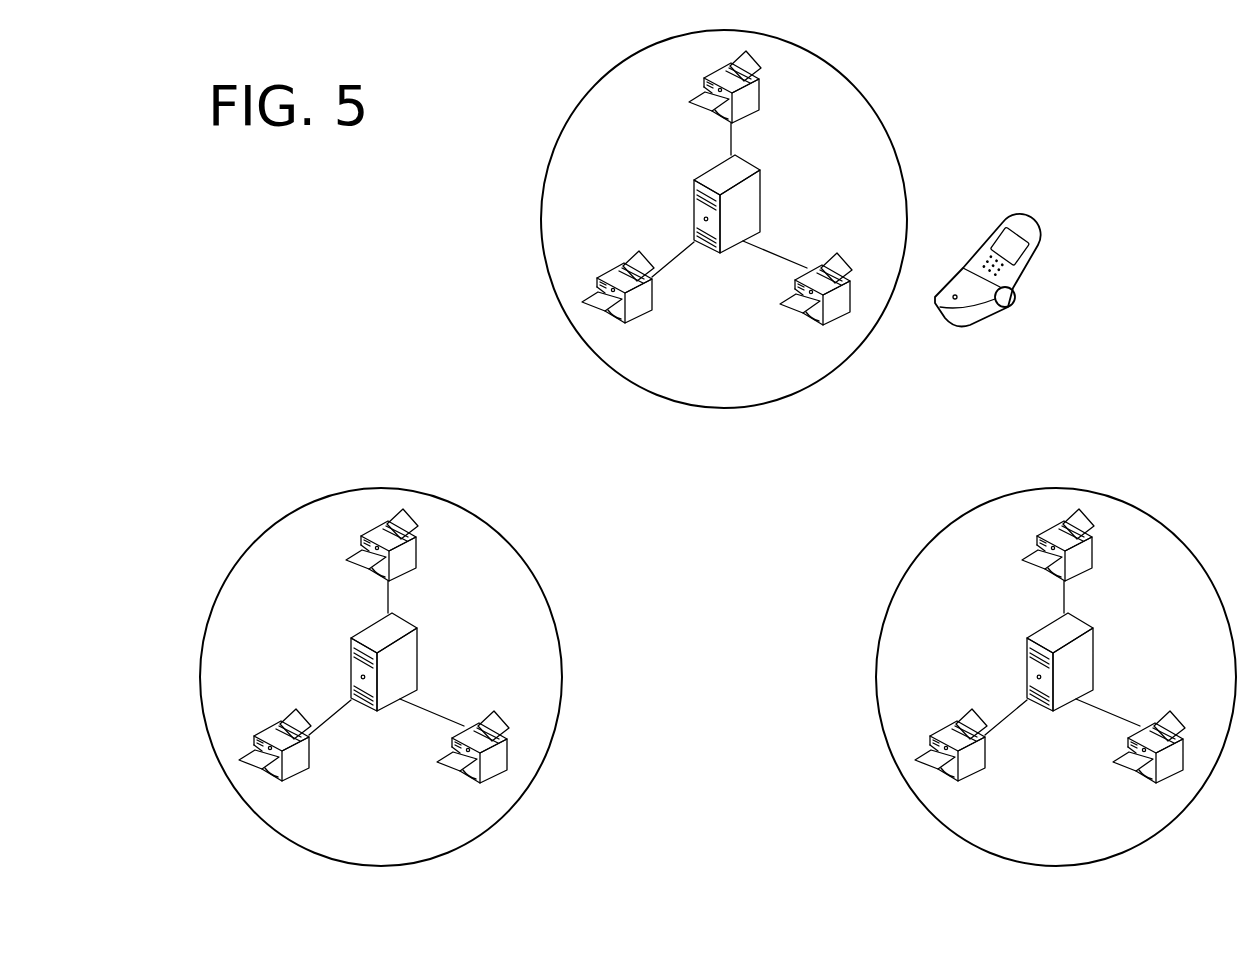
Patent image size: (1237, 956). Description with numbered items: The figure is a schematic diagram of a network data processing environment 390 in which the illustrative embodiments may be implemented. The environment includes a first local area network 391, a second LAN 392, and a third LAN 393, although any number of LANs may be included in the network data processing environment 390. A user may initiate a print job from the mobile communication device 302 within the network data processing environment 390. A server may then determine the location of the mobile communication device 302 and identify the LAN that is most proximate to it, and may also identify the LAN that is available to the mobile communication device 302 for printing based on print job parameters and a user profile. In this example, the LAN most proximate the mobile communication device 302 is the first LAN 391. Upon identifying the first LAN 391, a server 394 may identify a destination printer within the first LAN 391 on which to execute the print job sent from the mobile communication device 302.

The network data processing environment 390 is at (368, 229).
The first local area network 391 is at (749, 219).
The second local area network 392 is at (498, 528).
The third local area network 393 is at (1158, 513).
The server 394 is at (753, 200).
The mobile communication device 302 is at (1013, 291).